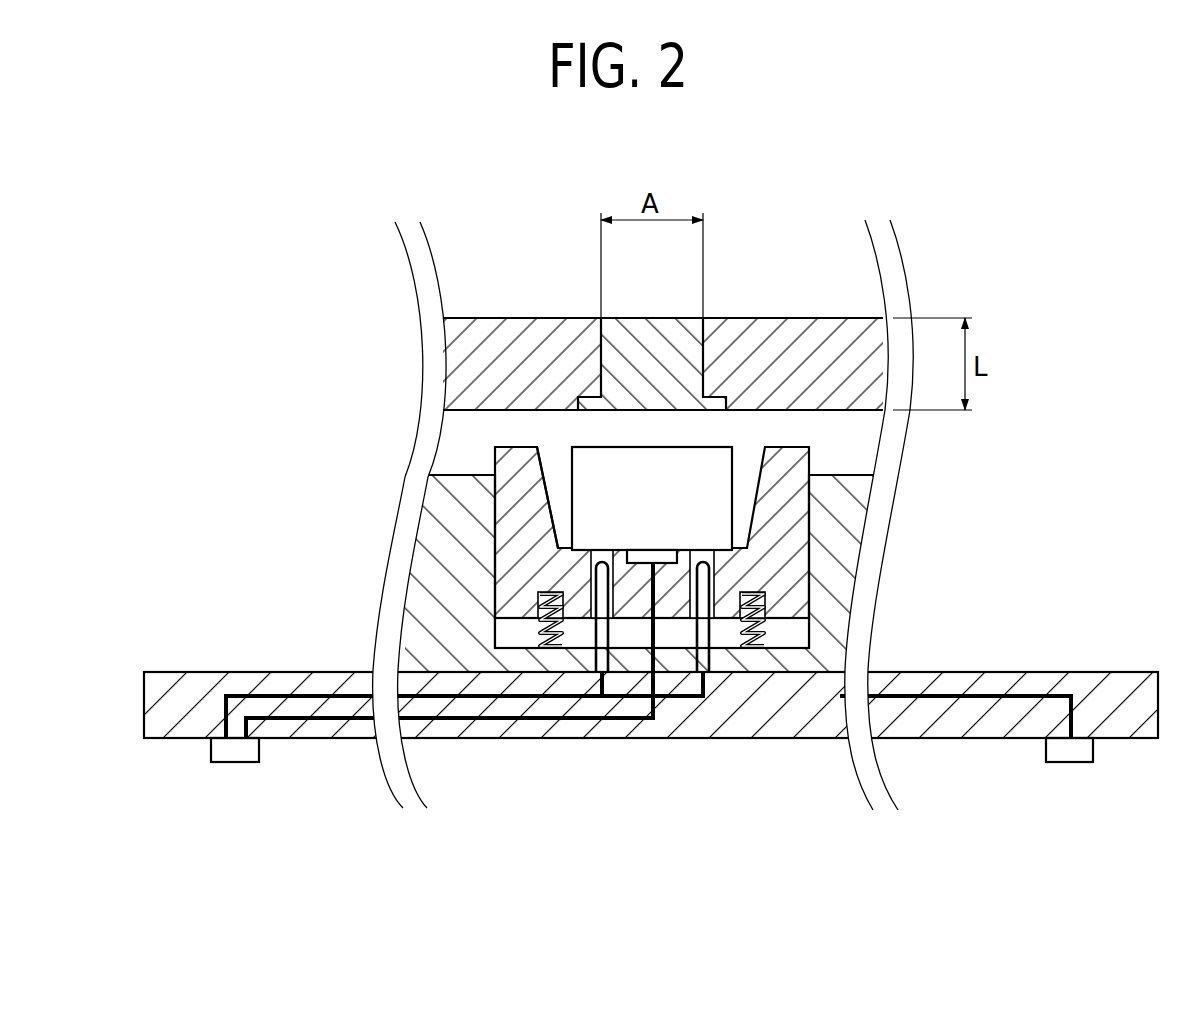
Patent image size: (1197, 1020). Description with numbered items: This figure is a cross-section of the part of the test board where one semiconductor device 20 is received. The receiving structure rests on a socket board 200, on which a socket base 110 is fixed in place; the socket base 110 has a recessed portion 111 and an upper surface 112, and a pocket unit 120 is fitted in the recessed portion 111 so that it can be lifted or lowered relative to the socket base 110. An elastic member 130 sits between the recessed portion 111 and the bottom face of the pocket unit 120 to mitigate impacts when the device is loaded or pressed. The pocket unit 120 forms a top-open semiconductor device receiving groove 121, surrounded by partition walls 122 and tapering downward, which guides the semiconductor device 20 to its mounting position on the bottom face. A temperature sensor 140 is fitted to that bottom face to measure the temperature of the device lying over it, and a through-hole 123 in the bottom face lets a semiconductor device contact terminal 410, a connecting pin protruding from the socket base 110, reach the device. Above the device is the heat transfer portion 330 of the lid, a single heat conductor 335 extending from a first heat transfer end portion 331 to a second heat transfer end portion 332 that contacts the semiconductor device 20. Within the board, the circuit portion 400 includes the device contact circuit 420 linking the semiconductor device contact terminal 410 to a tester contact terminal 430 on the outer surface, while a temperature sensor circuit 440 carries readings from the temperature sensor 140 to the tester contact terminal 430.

The semiconductor device 20 is at (718, 507).
The socket base 110 is at (700, 563).
The recessed portion 111 is at (812, 630).
The upper surface of socket body 112 is at (860, 472).
The pocket unit 120 is at (556, 533).
The semiconductor device receiving groove 121 is at (556, 486).
The partition wall 122 is at (512, 446).
The through-hole 123 is at (592, 588).
The elastic member 130 is at (748, 650).
The temperature sensor 140 is at (672, 547).
The socket board 200 is at (1125, 672).
The heat transfer portion 330 is at (663, 331).
The first heat transfer end portion 331 is at (648, 317).
The second heat transfer end portion 332 is at (597, 419).
The heat conductor 335 is at (690, 356).
The circuit portion 400 is at (648, 723).
The semiconductor device contact terminal 410 is at (608, 662).
The device contact circuit 420 is at (473, 698).
The tester contact terminal 430 is at (657, 827).
The temperature sensor circuit 440 is at (552, 720).